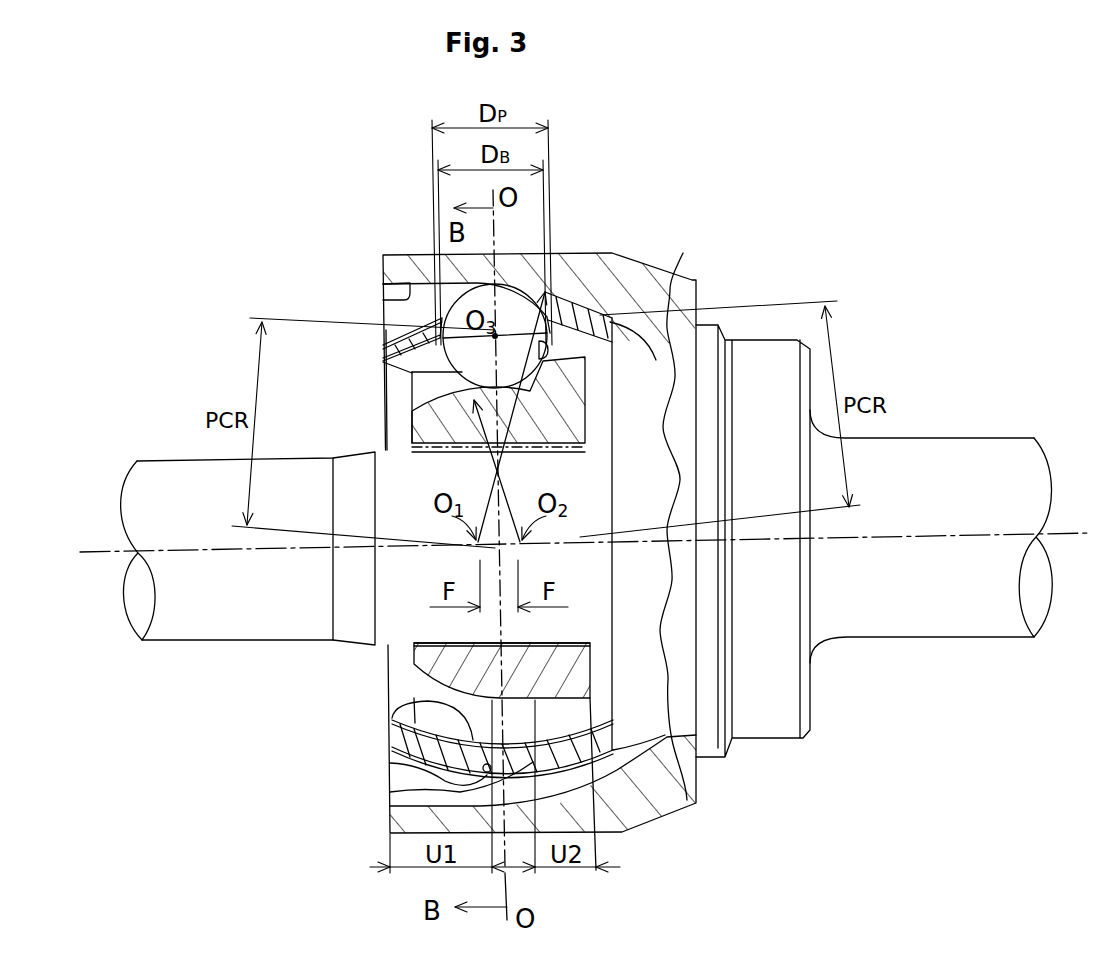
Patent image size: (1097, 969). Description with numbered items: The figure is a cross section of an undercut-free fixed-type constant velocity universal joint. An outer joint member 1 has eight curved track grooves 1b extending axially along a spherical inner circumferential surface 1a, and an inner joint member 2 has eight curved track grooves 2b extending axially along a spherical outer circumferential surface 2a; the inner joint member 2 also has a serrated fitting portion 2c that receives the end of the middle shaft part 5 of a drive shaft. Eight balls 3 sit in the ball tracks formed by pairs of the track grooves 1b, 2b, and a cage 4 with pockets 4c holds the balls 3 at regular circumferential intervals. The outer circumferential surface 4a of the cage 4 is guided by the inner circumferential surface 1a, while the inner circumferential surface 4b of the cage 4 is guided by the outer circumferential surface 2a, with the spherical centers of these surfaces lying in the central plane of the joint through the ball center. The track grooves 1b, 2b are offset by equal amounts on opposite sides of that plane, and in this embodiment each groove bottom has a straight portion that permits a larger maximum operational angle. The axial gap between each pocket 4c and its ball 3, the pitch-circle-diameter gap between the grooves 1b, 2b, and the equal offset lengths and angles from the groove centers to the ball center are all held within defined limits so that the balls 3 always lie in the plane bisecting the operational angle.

The outer joint member 1 is at (377, 270).
The inner circumferential surface 1a is at (390, 793).
The track groove 1b is at (410, 293).
The inner joint member 2 is at (401, 382).
The outer circumferential surface 2a is at (674, 290).
The track groove 2b is at (407, 408).
The serrated fitting portion 2c is at (562, 640).
The ball 3 is at (383, 349).
The cage 4 is at (563, 328).
The outer circumferential surface 4a is at (390, 763).
The inner circumferential surface 4b is at (392, 707).
The pocket 4c is at (546, 356).
The middle shaft part 5 is at (193, 626).